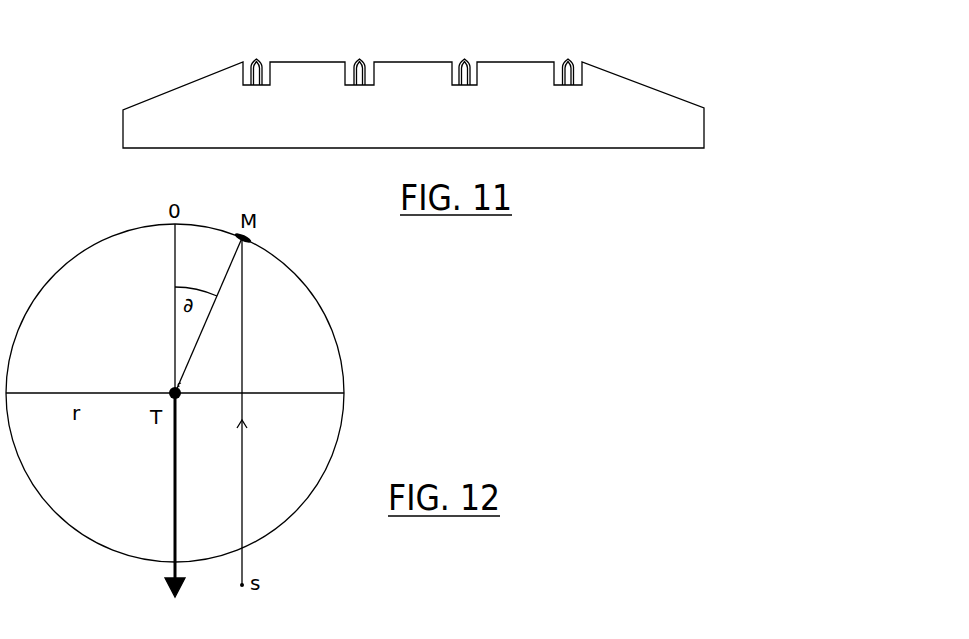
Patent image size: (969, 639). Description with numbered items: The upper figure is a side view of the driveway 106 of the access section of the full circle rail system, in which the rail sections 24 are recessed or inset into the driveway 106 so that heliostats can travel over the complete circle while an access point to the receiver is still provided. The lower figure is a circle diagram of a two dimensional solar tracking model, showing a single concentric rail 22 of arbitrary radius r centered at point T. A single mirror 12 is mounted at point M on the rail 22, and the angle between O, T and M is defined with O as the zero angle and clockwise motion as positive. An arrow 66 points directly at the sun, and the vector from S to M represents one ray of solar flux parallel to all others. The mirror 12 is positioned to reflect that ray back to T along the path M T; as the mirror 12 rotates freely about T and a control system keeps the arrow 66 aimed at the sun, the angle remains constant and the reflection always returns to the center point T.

In FIG. 11, the rail sections 24 is at (568, 59).
In FIG. 11, the driveway 106 is at (543, 148).
In FIG. 12, the concentric rail 22 is at (317, 300).
In FIG. 12, the mirror 12 is at (253, 236).
In FIG. 12, the arrow 66 is at (180, 465).